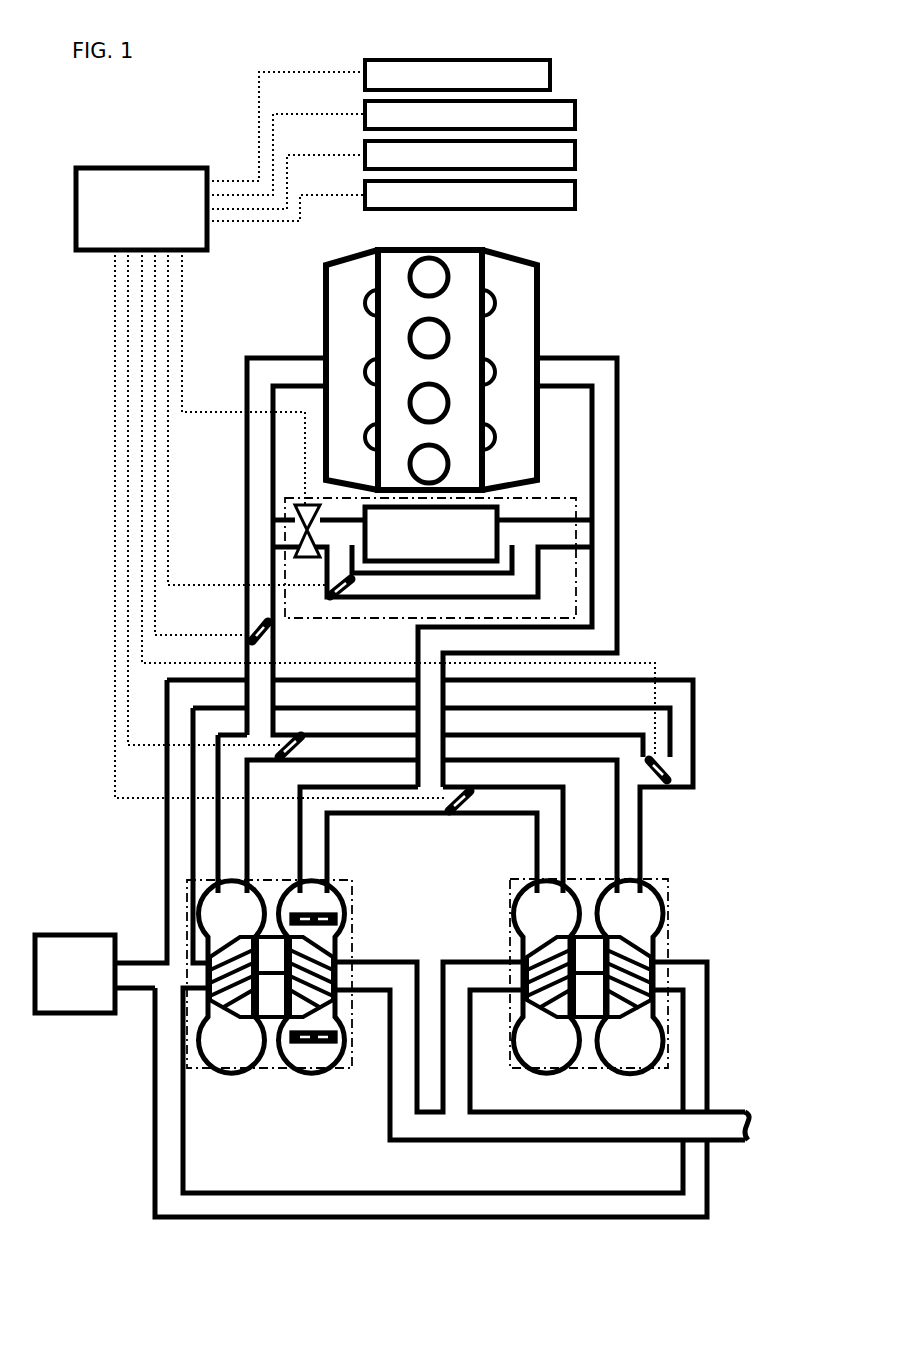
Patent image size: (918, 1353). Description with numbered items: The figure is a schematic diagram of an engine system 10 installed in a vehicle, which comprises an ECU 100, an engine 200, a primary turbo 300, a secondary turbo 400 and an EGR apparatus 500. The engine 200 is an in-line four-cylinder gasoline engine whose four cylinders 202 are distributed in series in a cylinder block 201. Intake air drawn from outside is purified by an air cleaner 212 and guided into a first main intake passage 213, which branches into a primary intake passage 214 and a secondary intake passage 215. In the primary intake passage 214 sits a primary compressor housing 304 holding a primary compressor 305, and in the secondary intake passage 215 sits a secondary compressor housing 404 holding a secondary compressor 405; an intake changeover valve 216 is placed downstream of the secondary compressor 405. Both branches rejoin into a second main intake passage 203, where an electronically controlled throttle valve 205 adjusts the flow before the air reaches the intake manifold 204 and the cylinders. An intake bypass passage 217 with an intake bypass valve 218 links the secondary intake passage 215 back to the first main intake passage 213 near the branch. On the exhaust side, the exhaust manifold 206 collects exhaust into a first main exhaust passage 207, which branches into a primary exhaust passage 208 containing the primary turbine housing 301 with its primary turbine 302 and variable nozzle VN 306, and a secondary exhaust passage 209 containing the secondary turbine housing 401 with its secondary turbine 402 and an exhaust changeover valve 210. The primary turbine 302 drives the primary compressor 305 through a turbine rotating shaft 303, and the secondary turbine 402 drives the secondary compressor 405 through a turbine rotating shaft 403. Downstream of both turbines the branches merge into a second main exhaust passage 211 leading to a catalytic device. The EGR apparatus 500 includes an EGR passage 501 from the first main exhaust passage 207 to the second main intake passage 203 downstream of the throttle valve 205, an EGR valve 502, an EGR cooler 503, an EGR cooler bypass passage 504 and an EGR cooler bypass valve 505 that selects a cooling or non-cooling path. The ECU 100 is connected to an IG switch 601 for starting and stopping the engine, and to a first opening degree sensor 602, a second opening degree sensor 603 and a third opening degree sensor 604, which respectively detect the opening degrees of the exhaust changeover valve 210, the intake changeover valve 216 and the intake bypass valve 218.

The engine system 10 is at (733, 158).
The ECU 100 is at (78, 168).
The engine 200 is at (610, 322).
The cylinder block 201 is at (473, 260).
The cylinders 202 is at (412, 262).
The second main intake passage 203 is at (263, 457).
The intake manifold 204 is at (337, 292).
The throttle valve 205 is at (248, 632).
The exhaust manifold 206 is at (523, 277).
The first main exhaust passage 207 is at (605, 405).
The primary exhaust passage 208 is at (377, 808).
The secondary exhaust passage 209 is at (483, 802).
The exhaust changeover valve 210 is at (447, 807).
The second main exhaust passage 211 is at (547, 1128).
The air cleaner 212 is at (75, 1016).
The first main intake passage 213 is at (140, 975).
The primary intake passage 214 is at (237, 774).
The secondary intake passage 215 is at (368, 1217).
The intake changeover valve 216 is at (300, 733).
The intake bypass passage 217 is at (663, 685).
The intake bypass valve 218 is at (667, 777).
The primary turbo 300 is at (188, 880).
The primary turbine housing 301 is at (305, 1062).
The primary turbine 302 is at (335, 945).
The turbine rotating shaft 303 is at (268, 977).
The primary compressor housing 304 is at (252, 907).
The primary compressor 305 is at (230, 1017).
The VN 306 is at (345, 910).
The secondary turbo 400 is at (668, 879).
The secondary turbine housing 401 is at (538, 918).
The secondary turbine 402 is at (523, 950).
The turbine rotating shaft 403 is at (587, 977).
The secondary compressor housing 404 is at (647, 920).
The secondary compressor 405 is at (655, 950).
The EGR apparatus 500 is at (577, 498).
The EGR passage 501 is at (552, 535).
The EGR valve 502 is at (295, 515).
The EGR cooler 503 is at (407, 560).
The EGR cooler bypass passage 504 is at (523, 585).
The EGR cooler bypass valve 505 is at (330, 598).
The IG switch 601 is at (552, 62).
The first opening degree sensor 602 is at (575, 102).
The second opening degree sensor 603 is at (575, 142).
The third opening degree sensor 604 is at (575, 182).